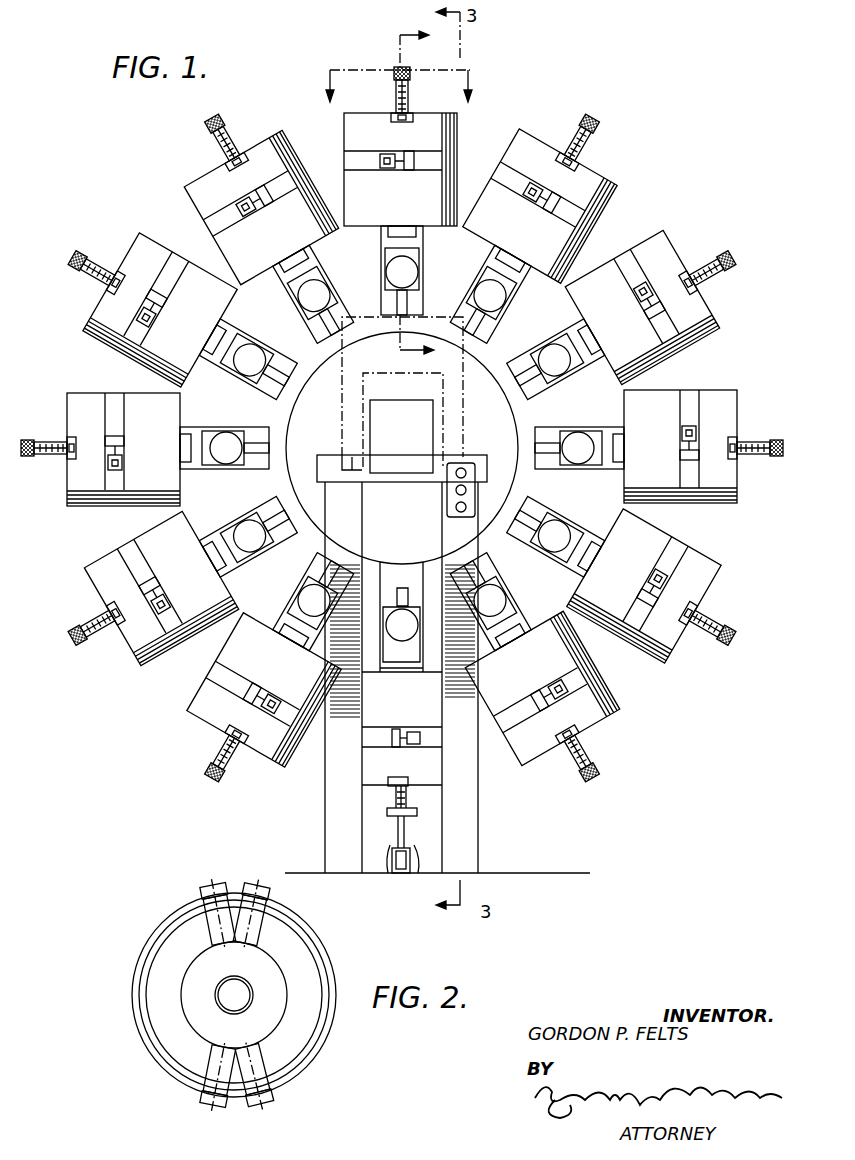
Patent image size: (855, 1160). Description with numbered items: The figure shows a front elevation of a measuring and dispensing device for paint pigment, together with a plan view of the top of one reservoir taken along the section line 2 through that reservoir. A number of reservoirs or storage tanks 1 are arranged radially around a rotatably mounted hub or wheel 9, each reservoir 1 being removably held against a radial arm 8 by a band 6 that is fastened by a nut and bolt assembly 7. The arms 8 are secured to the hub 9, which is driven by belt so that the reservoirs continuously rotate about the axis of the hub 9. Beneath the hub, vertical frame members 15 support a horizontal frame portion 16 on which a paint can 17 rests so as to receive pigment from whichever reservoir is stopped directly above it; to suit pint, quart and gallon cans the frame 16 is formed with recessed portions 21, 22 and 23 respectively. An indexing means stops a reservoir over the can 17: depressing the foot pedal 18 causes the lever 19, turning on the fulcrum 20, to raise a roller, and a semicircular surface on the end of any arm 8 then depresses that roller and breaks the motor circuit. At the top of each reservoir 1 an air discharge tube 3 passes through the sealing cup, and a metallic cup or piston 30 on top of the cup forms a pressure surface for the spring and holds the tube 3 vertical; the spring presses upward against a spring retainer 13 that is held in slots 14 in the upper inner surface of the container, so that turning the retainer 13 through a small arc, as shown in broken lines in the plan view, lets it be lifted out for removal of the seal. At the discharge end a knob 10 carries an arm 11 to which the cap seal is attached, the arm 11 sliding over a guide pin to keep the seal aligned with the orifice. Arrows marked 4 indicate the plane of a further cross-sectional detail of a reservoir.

In FIG. 1, the reservoir 1 is at (186, 178).
In FIG. 2, the reservoir 1 is at (128, 996).
In FIG. 1, the section line 2— 2 is at (72, 682).
In FIG. 1, the air discharge tube 3 is at (410, 90).
In FIG. 1, the knurled knob 4 is at (98, 258).
In FIG. 2, the knurled knob 4 is at (255, 996).
In FIG. 1, the band 6 is at (106, 510).
In FIG. 1, the nut and bolt assembly 7 is at (396, 172).
In FIG. 1, the radial arm 8 is at (386, 285).
In FIG. 1, the hub 9 is at (520, 422).
In FIG. 1, the knob 10 is at (404, 272).
In FIG. 1, the arm 11 is at (312, 320).
In FIG. 1, the spring retainer 13 is at (566, 248).
In FIG. 2, the spring retainer 13 is at (192, 926).
In FIG. 1, the slot 14 is at (400, 120).
In FIG. 2, the slot 14 is at (206, 890).
In FIG. 1, the vertical frame member 15 is at (324, 832).
In FIG. 1, the horizontal frame portion 16 is at (332, 455).
In FIG. 1, the paint can 17 is at (445, 436).
In FIG. 1, the foot pedal 18 is at (420, 812).
In FIG. 1, the lever 19 is at (392, 852).
In FIG. 1, the fulcrum 20 is at (412, 868).
In FIG. 1, the recessed portion 21 is at (390, 484).
In FIG. 1, the recessed portion 22 is at (437, 476).
In FIG. 1, the recessed portion 23 is at (368, 450).
In FIG. 2, the metallic cup or piston 30 is at (205, 1040).